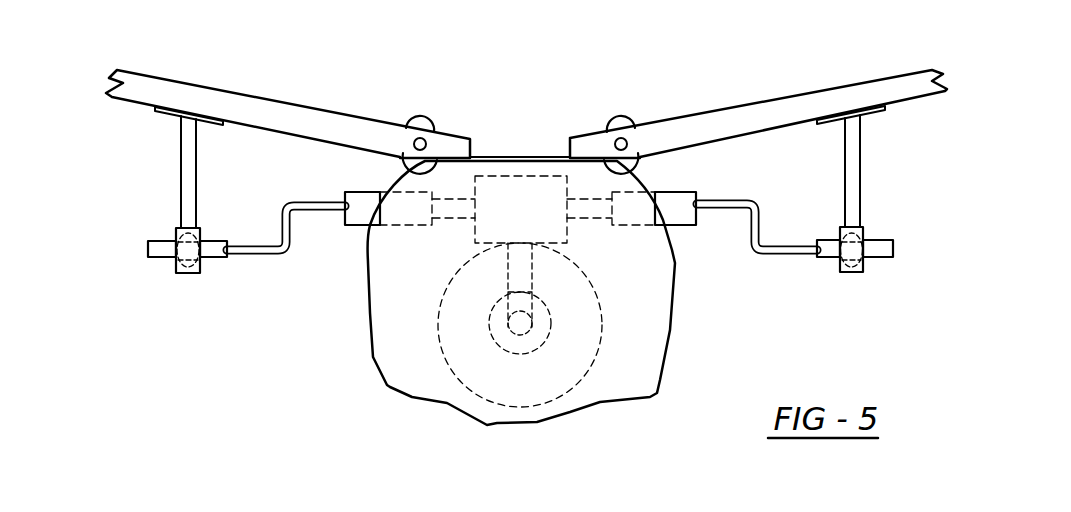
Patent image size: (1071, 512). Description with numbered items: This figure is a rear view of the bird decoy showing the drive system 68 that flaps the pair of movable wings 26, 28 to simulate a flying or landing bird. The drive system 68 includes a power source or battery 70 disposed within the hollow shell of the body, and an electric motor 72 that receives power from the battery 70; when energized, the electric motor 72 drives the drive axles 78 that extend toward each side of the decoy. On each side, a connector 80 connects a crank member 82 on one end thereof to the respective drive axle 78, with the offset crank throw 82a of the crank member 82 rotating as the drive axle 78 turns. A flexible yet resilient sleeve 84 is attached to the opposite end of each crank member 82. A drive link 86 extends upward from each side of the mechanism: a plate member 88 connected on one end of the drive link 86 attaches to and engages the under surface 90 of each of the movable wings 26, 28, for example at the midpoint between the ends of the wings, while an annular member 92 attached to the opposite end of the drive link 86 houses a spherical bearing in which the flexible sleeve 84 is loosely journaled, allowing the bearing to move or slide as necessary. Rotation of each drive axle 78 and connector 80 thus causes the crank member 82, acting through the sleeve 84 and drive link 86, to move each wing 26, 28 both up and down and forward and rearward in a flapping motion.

The movable wing 26 is at (312, 105).
The movable wing 28 is at (737, 103).
The drive system 68 is at (393, 321).
The battery 70 is at (595, 347).
The electric motor 72 is at (575, 228).
The drive axle 78 is at (450, 203).
The connector 80 is at (346, 222).
The crank member 82 is at (294, 203).
The crank throw 82a is at (282, 223).
The flexible sleeve 84 is at (214, 252).
The drive link 86 is at (191, 171).
The plate member 88 is at (165, 113).
The under surface 90 is at (254, 124).
The annular member 92 is at (183, 268).